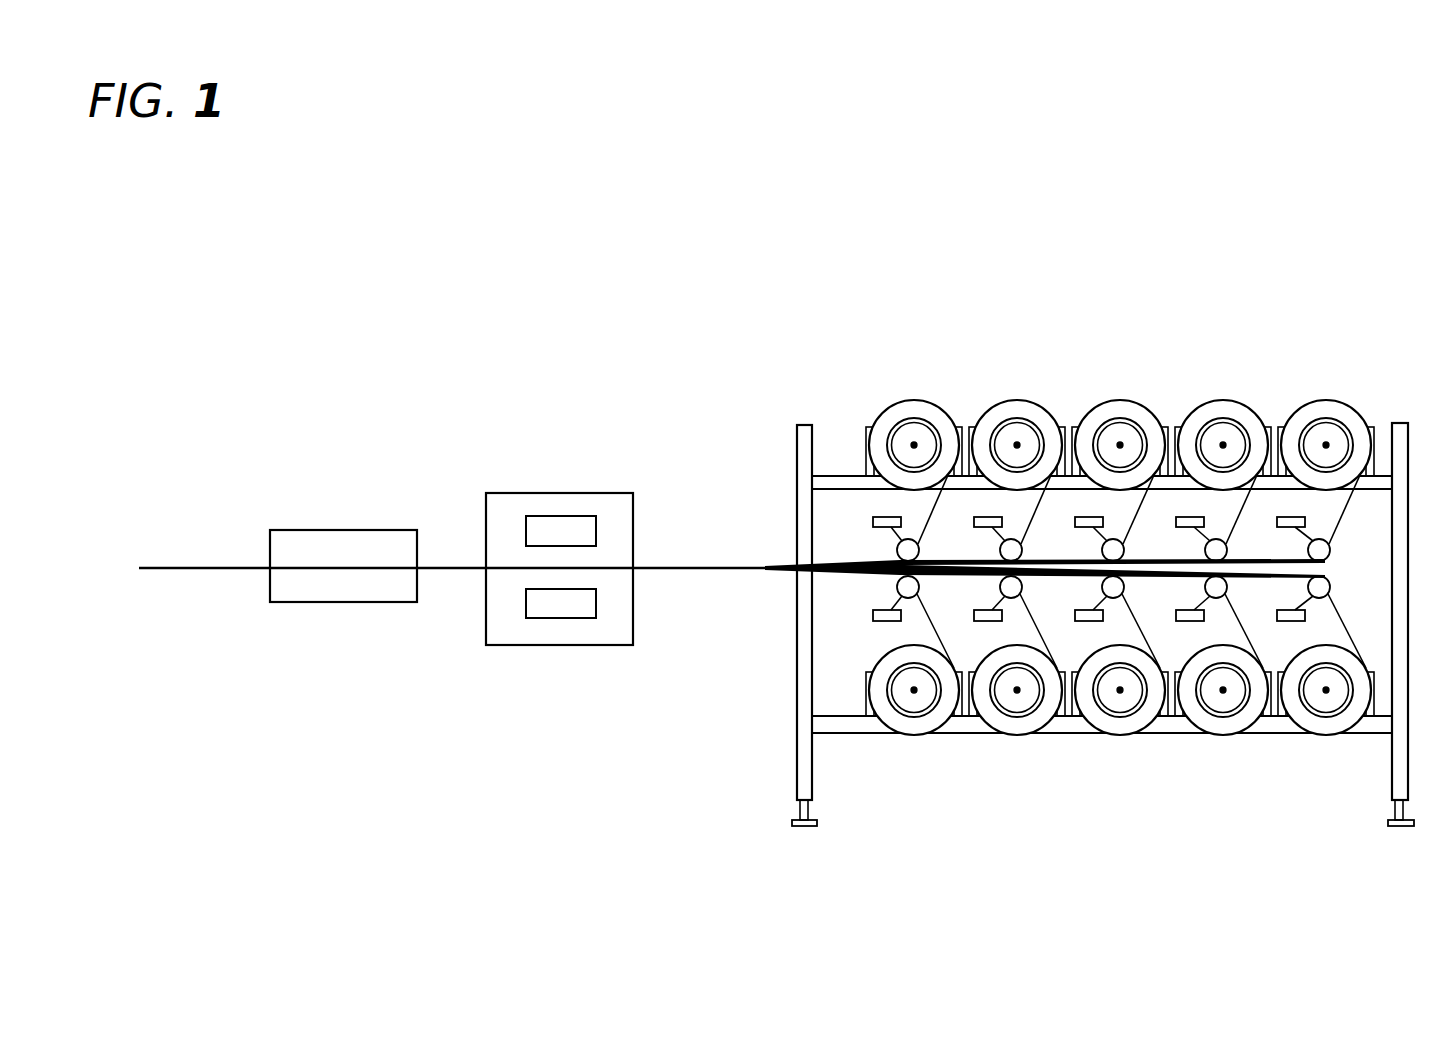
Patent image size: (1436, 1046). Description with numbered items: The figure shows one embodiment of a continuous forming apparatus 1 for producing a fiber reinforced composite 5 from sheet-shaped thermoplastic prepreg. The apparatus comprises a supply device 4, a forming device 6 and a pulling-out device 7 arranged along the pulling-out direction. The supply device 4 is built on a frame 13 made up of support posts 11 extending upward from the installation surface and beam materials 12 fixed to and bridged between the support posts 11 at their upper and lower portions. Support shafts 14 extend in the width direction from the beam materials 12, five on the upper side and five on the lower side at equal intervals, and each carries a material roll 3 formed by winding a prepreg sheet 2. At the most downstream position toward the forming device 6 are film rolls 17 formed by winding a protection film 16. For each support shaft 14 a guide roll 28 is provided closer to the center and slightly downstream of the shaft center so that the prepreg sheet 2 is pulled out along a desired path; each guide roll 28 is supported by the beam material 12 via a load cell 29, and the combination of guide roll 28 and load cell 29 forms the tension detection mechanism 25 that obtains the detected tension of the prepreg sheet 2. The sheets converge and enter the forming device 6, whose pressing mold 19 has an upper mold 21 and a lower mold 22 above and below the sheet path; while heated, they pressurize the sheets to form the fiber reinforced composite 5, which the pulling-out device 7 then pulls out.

The continuous forming apparatus 1 is at (1078, 520).
The prepreg sheet 2 is at (1352, 510).
The material roll 3 is at (1123, 570).
The supply device 4 is at (1178, 412).
The fiber reinforced composite 5 is at (452, 572).
The forming device 6 is at (479, 480).
The pulling-out device 7 is at (268, 517).
The support post 11 is at (800, 754).
The beam material 12 is at (835, 477).
The frame 13 is at (795, 797).
The support shaft 14 is at (930, 438).
The protection film 16 is at (938, 512).
The film roll 17 is at (1123, 570).
The pressing mold 19 is at (603, 538).
The upper mold 21 is at (570, 533).
The lower mold 22 is at (562, 612).
The tension detection mechanism 25 is at (873, 528).
The guide roll 28 is at (1330, 553).
The load cell 29 is at (1293, 523).